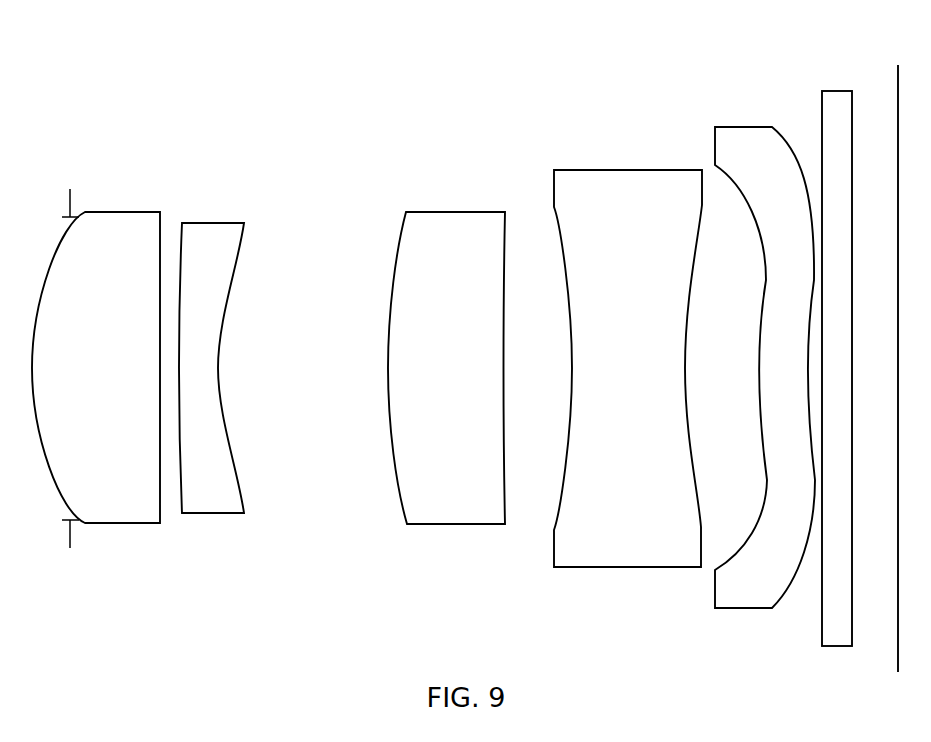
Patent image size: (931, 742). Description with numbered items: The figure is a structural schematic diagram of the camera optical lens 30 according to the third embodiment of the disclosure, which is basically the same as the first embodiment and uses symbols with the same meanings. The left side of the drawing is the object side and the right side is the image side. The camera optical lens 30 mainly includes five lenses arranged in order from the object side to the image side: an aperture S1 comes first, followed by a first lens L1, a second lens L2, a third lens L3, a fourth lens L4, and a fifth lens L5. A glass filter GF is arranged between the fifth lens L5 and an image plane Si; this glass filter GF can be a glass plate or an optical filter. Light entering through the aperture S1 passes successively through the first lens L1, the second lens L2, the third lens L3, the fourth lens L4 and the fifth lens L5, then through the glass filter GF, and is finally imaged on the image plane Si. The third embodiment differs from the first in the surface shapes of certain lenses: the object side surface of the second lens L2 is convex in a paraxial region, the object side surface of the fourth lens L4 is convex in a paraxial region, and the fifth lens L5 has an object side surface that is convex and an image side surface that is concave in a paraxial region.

The camera optical lens 30 is at (452, 46).
The aperture S1 is at (70, 356).
The first lens L1 is at (96, 354).
The second lens L2 is at (211, 355).
The third lens L3 is at (446, 354).
The fourth lens L4 is at (628, 356).
The fifth lens L5 is at (765, 355).
The glass filter GF is at (836, 354).
The image plane Si is at (897, 356).